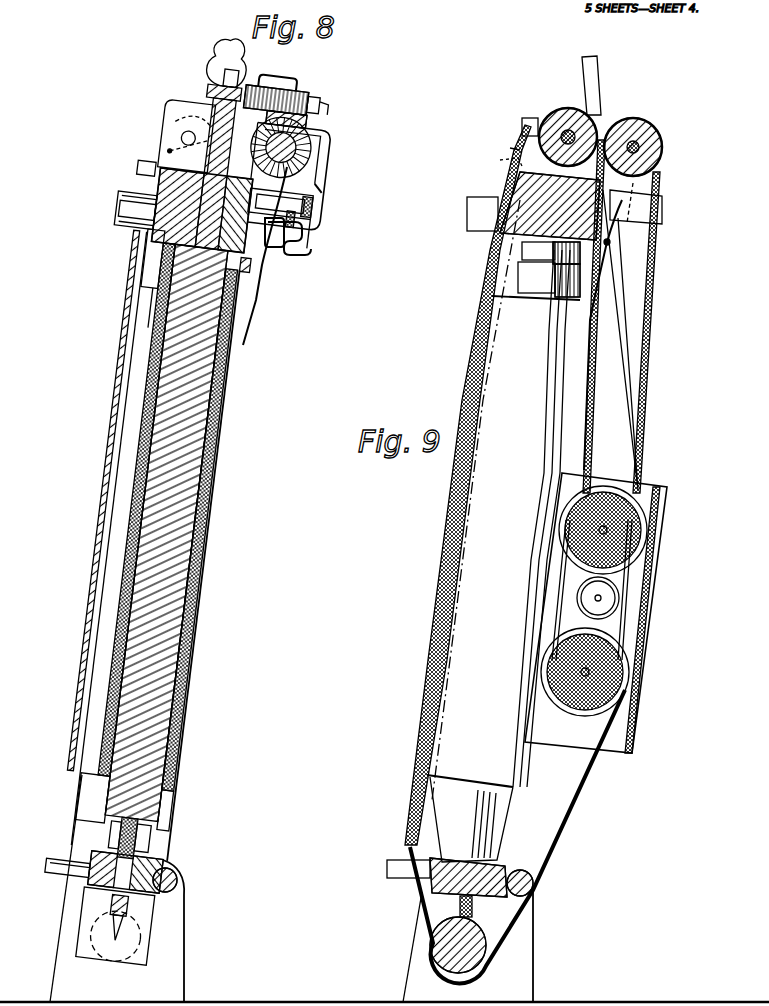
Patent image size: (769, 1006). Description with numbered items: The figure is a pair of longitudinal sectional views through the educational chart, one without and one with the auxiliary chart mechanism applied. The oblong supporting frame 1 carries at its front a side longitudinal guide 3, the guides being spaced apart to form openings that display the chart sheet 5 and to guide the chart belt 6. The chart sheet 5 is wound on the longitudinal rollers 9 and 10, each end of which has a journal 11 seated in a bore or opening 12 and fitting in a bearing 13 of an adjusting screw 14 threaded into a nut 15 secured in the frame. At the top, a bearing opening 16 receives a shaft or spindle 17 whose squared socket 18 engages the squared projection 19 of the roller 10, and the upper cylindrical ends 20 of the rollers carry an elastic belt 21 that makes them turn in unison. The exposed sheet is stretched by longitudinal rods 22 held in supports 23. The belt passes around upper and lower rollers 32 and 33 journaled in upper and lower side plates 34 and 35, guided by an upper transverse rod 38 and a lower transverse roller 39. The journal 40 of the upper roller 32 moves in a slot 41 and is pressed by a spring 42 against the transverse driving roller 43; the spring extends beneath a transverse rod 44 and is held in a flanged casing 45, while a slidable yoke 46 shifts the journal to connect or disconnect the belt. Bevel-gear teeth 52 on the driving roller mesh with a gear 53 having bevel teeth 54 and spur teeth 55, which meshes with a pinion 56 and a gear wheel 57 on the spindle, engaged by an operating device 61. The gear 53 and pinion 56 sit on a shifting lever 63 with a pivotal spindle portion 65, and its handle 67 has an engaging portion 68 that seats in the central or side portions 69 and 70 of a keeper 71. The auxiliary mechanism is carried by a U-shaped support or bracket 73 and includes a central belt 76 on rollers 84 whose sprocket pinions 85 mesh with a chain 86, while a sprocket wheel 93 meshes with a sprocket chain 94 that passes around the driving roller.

In FIG. 9, the oblong supporting frame 1 is at (528, 875).
In FIG. 9, the side longitudinal guide 3 is at (445, 790).
In FIG. 8, the chart sheet 5 is at (80, 644).
In FIG. 9, the chart sheet 5 is at (455, 525).
In FIG. 9, the chart belt 6 is at (412, 925).
In FIG. 9, the longitudinal roller 9 is at (400, 862).
In FIG. 8, the longitudinal roller 10 is at (150, 700).
In FIG. 8, the journal 11 is at (140, 828).
In FIG. 8, the bore or opening 12 is at (148, 845).
In FIG. 8, the bearing 13 is at (105, 838).
In FIG. 8, the adjusting screw 14 is at (130, 905).
In FIG. 9, the adjusting screw 14 is at (475, 908).
In FIG. 8, the nut 15 is at (100, 885).
In FIG. 8, the bearing opening 16 is at (120, 195).
In FIG. 8, the shaft or spindle 17 is at (160, 210).
In FIG. 8, the squared socket 18 is at (150, 283).
In FIG. 8, the squared projection 19 is at (155, 315).
In FIG. 8, the upper cylindrical end 20 is at (235, 342).
In FIG. 9, the upper cylindrical end 20 is at (522, 252).
In FIG. 8, the elastic belt 21 is at (260, 300).
In FIG. 9, the elastic belt 21 is at (518, 280).
In FIG. 8, the longitudinal roller or rod 22 is at (113, 416).
In FIG. 8, the support 23 is at (108, 204).
In FIG. 9, the upper roller 32 is at (565, 110).
In FIG. 8, the lower roller 33 is at (120, 968).
In FIG. 9, the lower roller 33 is at (440, 945).
In FIG. 9, the upper side plate or member 34 is at (522, 128).
In FIG. 8, the lower side plate or member 35 is at (185, 978).
In FIG. 9, the lower side plate or member 35 is at (522, 975).
In FIG. 8, the upper transverse rod 38 is at (268, 298).
In FIG. 9, the upper transverse rod 38 is at (615, 260).
In FIG. 8, the lower transverse roller 39 is at (180, 884).
In FIG. 9, the lower transverse roller 39 is at (535, 888).
In FIG. 8, the journal 40 is at (215, 90).
In FIG. 9, the journal 40 is at (520, 140).
In FIG. 8, the slot 41 is at (190, 118).
In FIG. 8, the spring 42 is at (175, 130).
In FIG. 9, the spring 42 is at (510, 160).
In FIG. 8, the transverse driving roller 43 is at (328, 150).
In FIG. 9, the transverse driving roller 43 is at (638, 118).
In FIG. 8, the transverse rod 44 is at (188, 155).
In FIG. 9, the transverse rod 44 is at (500, 150).
In FIG. 8, the flanged casing 45 is at (142, 172).
In FIG. 9, the flanged casing 45 is at (480, 200).
In FIG. 9, the slidable yoke 46 is at (598, 68).
In FIG. 8, the bevel-gear teeth 52 is at (312, 165).
In FIG. 8, the gear 53 is at (320, 112).
In FIG. 8, the bevel teeth 54 is at (310, 140).
In FIG. 8, the spur teeth 55 is at (345, 118).
In FIG. 8, the pinion 56 is at (250, 100).
In FIG. 8, the gear wheel 57 is at (208, 70).
In FIG. 8, the operating device 61 is at (238, 68).
In FIG. 8, the shifting lever 63 is at (325, 197).
In FIG. 8, the pivotal spindle portion 65 is at (300, 106).
In FIG. 8, the handle 67 is at (312, 250).
In FIG. 8, the engaging portion 68 is at (315, 232).
In FIG. 8, the central portion of keeper 69 is at (315, 178).
In FIG. 8, the side portion of keeper 70 is at (315, 212).
In FIG. 8, the keeper 71 is at (345, 245).
In FIG. 9, the support or bracket 73 is at (612, 760).
In FIG. 9, the central belt 76 is at (630, 372).
In FIG. 9, the roller 84 is at (620, 525).
In FIG. 9, the sprocket pinion 85 is at (610, 675).
In FIG. 9, the chain 86 is at (640, 640).
In FIG. 9, the sprocket wheel 93 is at (615, 600).
In FIG. 9, the sprocket chain 94 is at (650, 318).